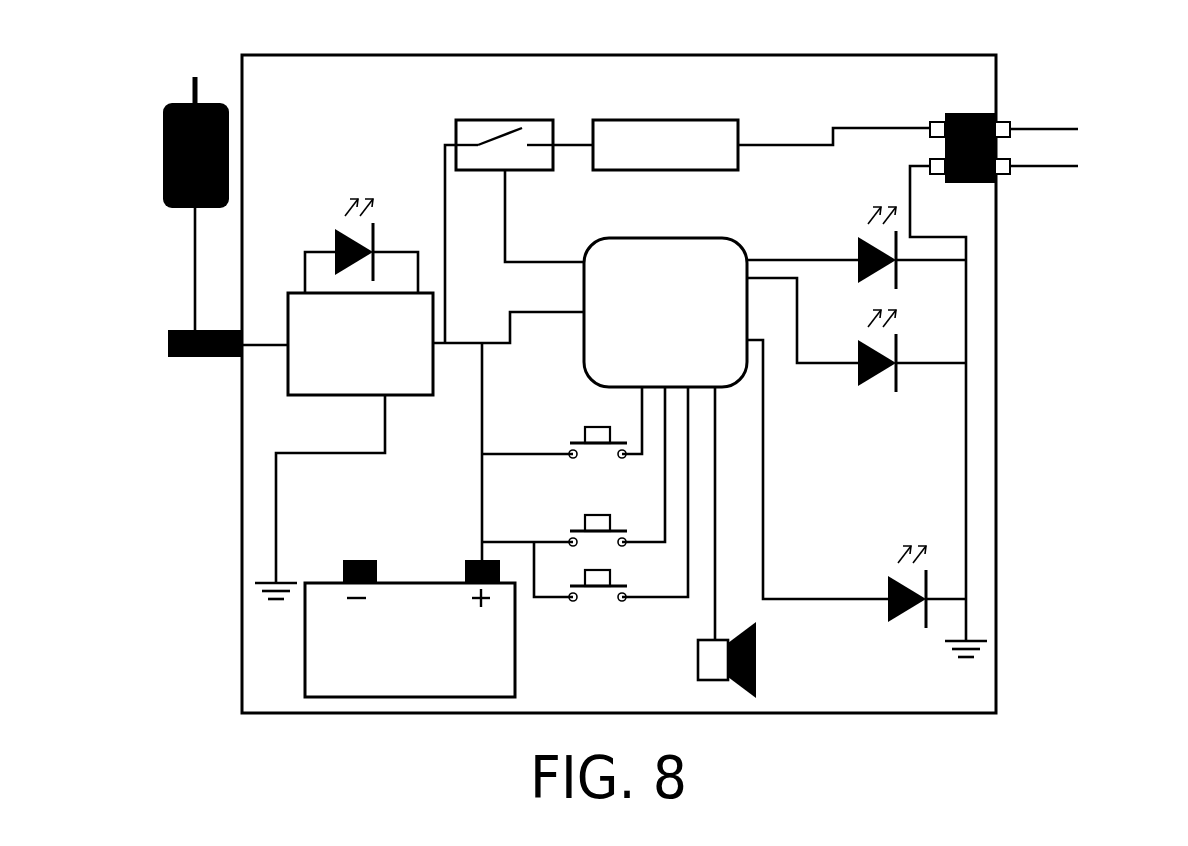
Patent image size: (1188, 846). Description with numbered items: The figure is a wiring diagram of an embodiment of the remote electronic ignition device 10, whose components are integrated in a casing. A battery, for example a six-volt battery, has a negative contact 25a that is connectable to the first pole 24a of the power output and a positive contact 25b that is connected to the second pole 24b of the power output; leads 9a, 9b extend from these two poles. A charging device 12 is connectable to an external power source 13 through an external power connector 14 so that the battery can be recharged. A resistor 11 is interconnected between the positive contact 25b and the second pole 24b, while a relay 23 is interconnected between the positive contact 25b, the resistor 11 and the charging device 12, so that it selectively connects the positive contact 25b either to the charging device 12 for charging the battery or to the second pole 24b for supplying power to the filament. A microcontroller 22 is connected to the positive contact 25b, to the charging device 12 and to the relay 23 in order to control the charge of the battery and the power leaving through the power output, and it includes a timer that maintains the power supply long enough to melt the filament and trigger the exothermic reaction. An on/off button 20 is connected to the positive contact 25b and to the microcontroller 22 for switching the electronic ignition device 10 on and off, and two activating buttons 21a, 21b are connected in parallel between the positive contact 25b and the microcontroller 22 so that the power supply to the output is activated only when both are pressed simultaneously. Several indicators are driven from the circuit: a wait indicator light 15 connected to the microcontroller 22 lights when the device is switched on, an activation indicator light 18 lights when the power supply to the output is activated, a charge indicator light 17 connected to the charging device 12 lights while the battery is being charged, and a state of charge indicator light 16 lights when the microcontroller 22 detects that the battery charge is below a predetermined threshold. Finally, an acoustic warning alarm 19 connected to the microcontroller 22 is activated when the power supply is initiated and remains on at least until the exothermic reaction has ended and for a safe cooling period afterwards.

The lead wire 9a is at (1058, 166).
The lead wire 9b is at (1058, 125).
The electronic ignition device 10 is at (220, 504).
The resistor 11 is at (665, 130).
The charging device 12 is at (322, 368).
The external power source 13 is at (163, 140).
The external power connector 14 is at (168, 348).
The wait indicator light 15 is at (935, 588).
The state of charge indicator light 16 is at (900, 265).
The charge indicator light 17 is at (330, 237).
The activation indicator light 18 is at (905, 370).
The acoustic warning alarm 19 is at (760, 662).
The on/off button 20 is at (575, 438).
The activating button 21a is at (578, 523).
The activating button 21b is at (601, 592).
The microcontroller 22 is at (733, 255).
The relay 23 is at (502, 125).
The first pole 24a is at (1005, 176).
The second pole 24b is at (1000, 128).
The negative contact 25a is at (340, 583).
The positive contact 25b is at (463, 583).